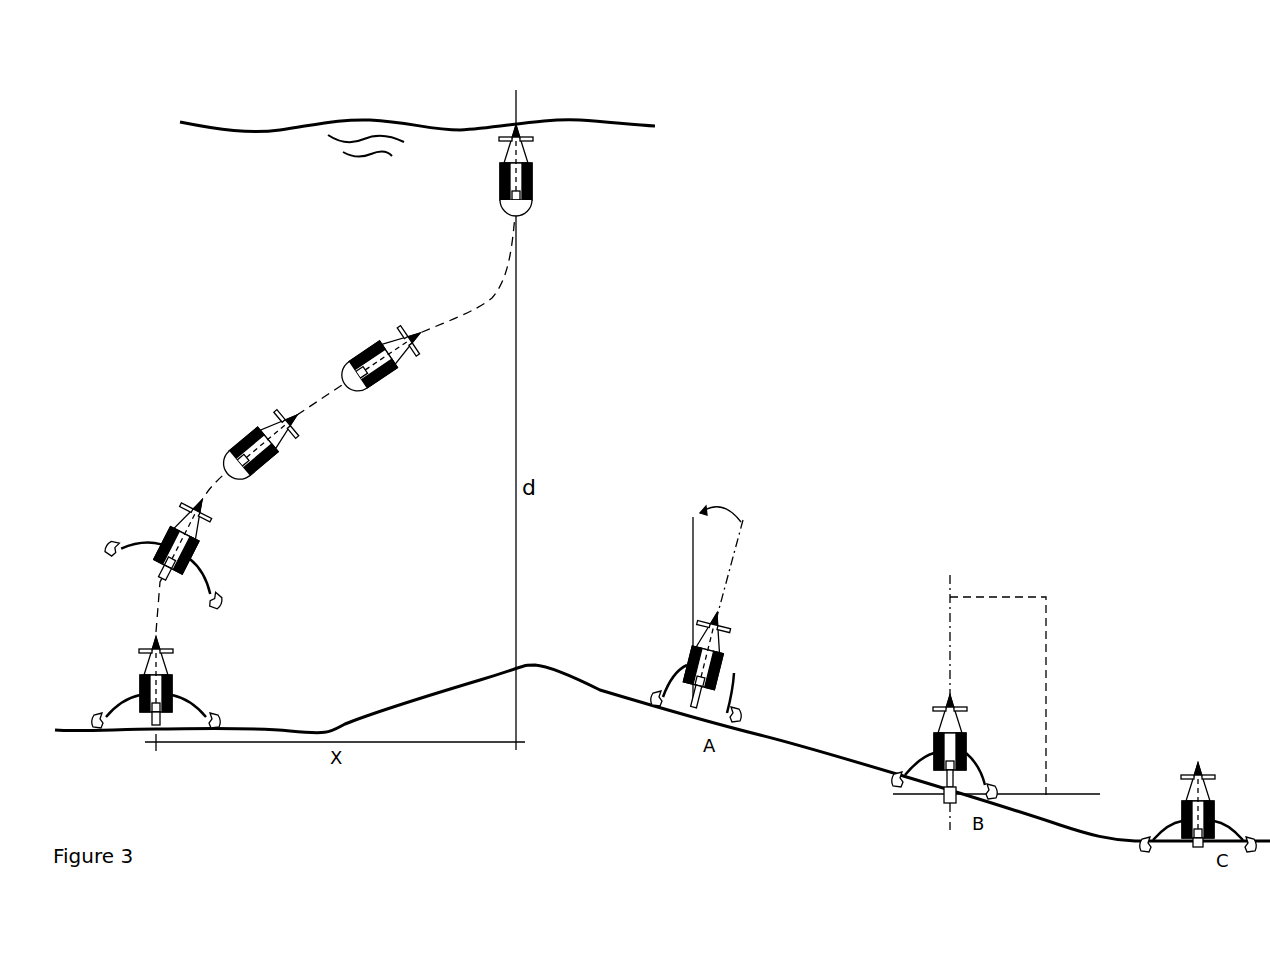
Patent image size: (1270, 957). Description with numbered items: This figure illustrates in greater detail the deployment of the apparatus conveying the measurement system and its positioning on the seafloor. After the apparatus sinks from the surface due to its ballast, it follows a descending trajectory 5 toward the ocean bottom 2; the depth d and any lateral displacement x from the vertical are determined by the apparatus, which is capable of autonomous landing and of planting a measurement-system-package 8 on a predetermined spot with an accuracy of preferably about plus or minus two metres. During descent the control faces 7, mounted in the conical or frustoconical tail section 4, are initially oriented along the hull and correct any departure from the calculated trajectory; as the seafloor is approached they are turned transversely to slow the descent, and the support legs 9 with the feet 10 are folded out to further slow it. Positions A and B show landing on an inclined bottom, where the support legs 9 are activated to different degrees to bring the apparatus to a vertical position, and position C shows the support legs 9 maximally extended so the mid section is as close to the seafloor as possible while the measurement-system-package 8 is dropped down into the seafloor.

The ocean bottom 2 is at (568, 672).
The conical or frustoconical tail section 4 is at (962, 725).
The descending trajectory 5 is at (445, 322).
The control face 7 is at (935, 706).
The measurement-system-package 8 is at (945, 800).
The support legs 9 is at (913, 758).
The nosecone and feet 10 is at (990, 787).